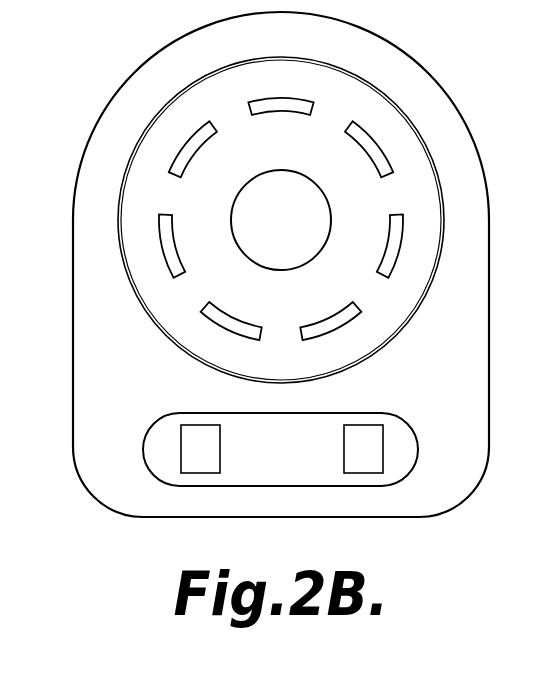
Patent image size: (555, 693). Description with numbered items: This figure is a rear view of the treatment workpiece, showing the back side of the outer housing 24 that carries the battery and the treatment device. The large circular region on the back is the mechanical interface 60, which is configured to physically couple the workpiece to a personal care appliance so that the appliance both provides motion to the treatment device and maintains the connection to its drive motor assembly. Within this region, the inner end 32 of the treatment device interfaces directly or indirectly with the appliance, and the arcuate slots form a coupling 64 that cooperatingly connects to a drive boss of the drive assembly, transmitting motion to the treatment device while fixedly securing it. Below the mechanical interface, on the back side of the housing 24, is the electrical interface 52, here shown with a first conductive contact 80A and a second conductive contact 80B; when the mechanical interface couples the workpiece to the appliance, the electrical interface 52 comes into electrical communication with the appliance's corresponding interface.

The outer housing 24 is at (143, 66).
The inner end 32 is at (387, 126).
The mechanical interface 60 is at (406, 184).
The coupling 64 is at (163, 243).
The electrical interface 52 is at (148, 457).
The first conductive contact 80A is at (200, 469).
The second conductive contact 80B is at (362, 469).